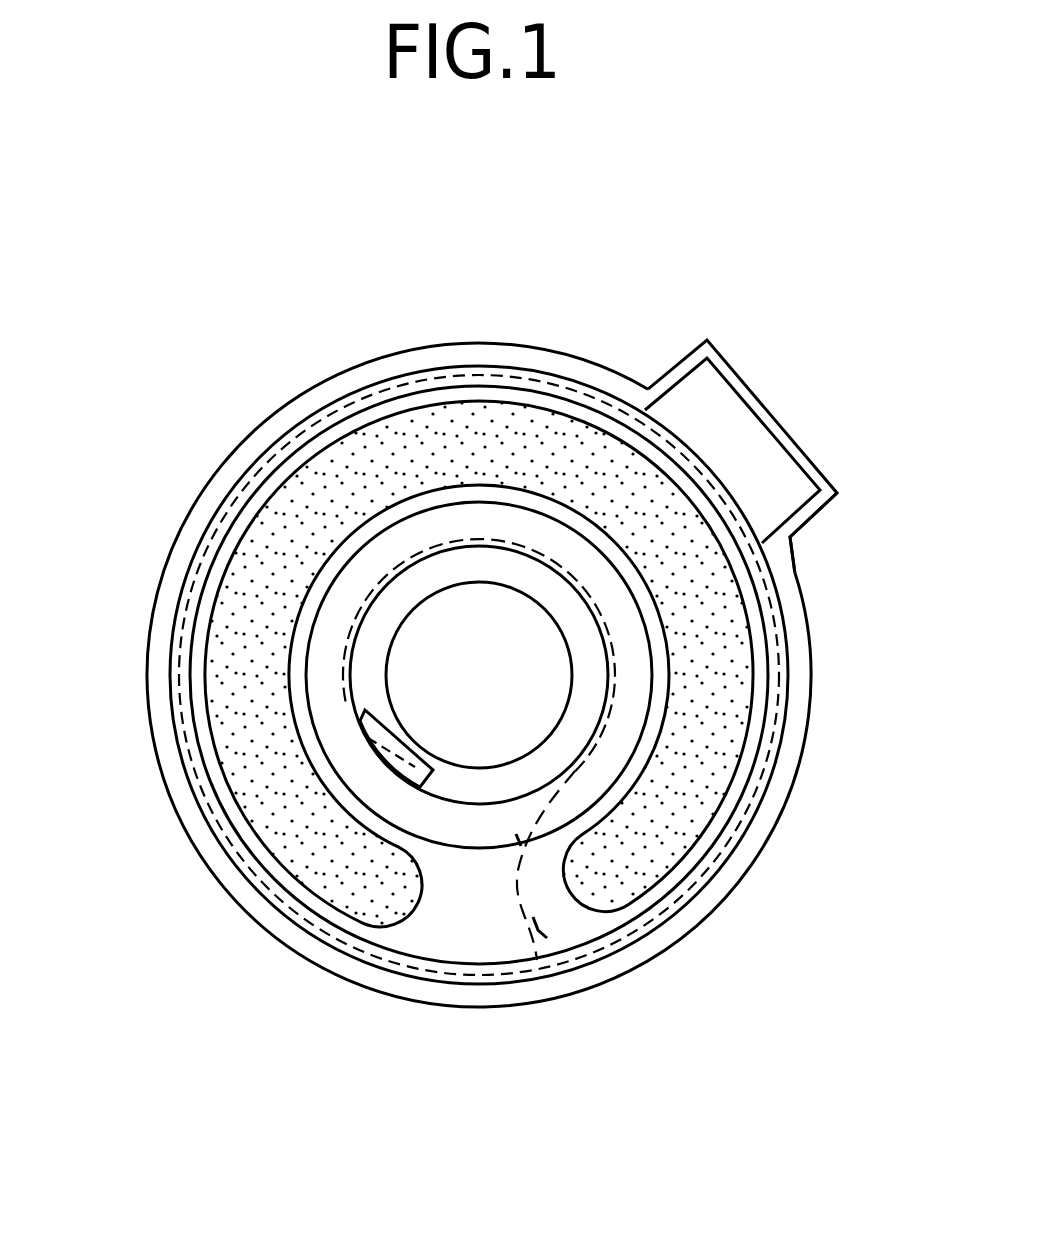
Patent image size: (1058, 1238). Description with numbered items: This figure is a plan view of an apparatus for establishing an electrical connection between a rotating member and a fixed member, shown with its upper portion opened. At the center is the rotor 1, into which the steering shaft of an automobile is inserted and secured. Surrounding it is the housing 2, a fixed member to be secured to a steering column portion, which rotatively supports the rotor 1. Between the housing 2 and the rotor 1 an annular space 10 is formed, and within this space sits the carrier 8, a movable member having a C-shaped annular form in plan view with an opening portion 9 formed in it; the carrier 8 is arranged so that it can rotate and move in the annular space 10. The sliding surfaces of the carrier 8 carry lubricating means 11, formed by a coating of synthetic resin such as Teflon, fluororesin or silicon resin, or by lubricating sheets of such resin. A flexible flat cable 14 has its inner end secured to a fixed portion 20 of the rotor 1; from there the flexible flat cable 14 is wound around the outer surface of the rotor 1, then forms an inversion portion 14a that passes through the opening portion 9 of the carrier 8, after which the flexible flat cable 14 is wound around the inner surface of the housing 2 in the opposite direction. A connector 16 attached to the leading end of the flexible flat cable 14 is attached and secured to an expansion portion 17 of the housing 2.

The rotor 1 is at (578, 718).
The housing 2 is at (140, 621).
The carrier 8 is at (750, 726).
The opening portion 9 is at (444, 940).
The annular space 10 is at (262, 860).
The lubricating means 11 is at (226, 732).
The flexible flat cable 14 is at (218, 514).
The inversion portion 14a is at (538, 962).
The connector 16 is at (717, 378).
The expansion portion 17 is at (835, 500).
The fixed portion 20 is at (423, 742).